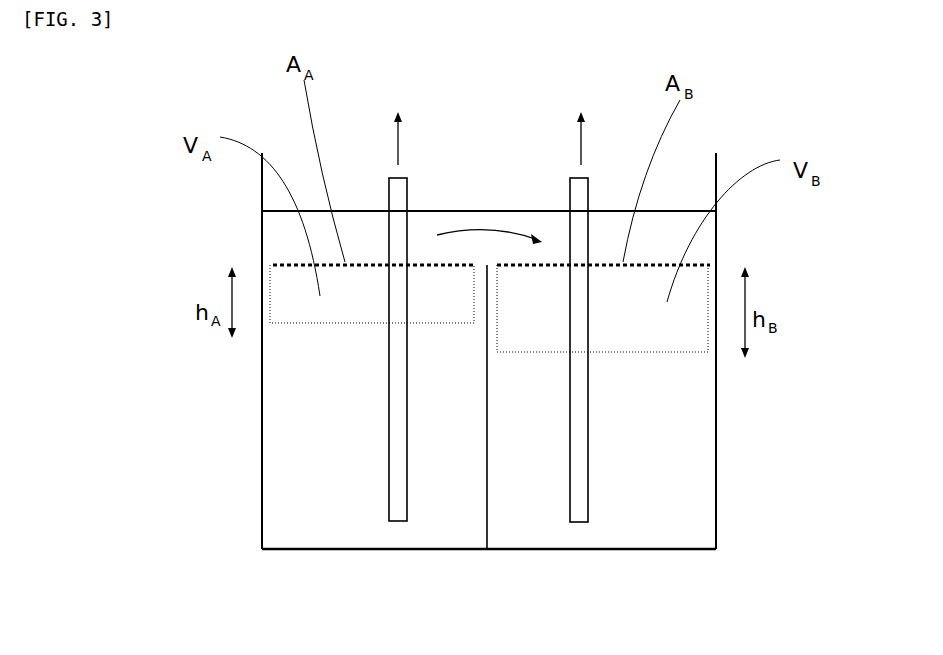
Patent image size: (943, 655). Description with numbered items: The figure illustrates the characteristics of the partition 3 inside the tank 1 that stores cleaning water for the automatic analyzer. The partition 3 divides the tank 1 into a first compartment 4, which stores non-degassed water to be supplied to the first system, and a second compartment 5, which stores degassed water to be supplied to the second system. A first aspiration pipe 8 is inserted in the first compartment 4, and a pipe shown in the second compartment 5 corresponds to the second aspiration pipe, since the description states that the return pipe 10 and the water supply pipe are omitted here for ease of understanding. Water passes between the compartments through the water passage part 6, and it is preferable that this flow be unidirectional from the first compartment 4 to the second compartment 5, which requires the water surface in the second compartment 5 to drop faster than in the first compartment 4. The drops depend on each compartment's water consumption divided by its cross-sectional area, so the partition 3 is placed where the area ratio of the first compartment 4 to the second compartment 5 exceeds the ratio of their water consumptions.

The tank 1 is at (258, 493).
The partition 3 is at (490, 526).
The first compartment 4 is at (305, 519).
The second compartment 5 is at (681, 515).
The water passage part 6 is at (490, 262).
The first aspiration pipe 8 is at (385, 465).
The return pipe 10 is at (590, 478).